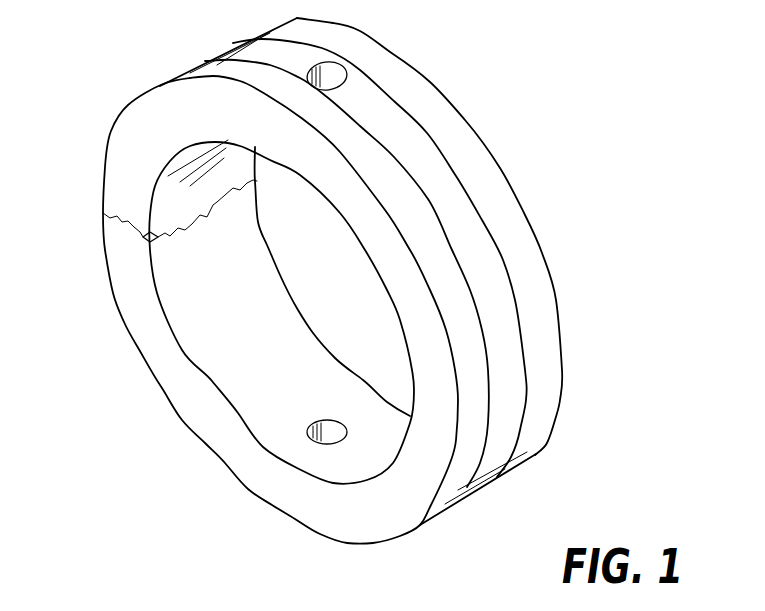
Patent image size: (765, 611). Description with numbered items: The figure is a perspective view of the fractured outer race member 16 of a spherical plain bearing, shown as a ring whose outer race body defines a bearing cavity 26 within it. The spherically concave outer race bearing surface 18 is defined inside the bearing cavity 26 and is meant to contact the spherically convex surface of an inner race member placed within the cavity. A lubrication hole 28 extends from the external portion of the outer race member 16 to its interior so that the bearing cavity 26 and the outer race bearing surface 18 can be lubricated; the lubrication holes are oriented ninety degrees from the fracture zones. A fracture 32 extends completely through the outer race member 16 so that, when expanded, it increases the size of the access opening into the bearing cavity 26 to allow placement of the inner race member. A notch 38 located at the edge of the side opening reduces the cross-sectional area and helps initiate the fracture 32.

The outer race member 16 is at (497, 202).
The outer race bearing surface 18 is at (282, 385).
The bearing cavity 26 is at (293, 267).
The lubrication hole 28 is at (345, 67).
The fracture 32 is at (118, 212).
The notch 38 is at (150, 237).